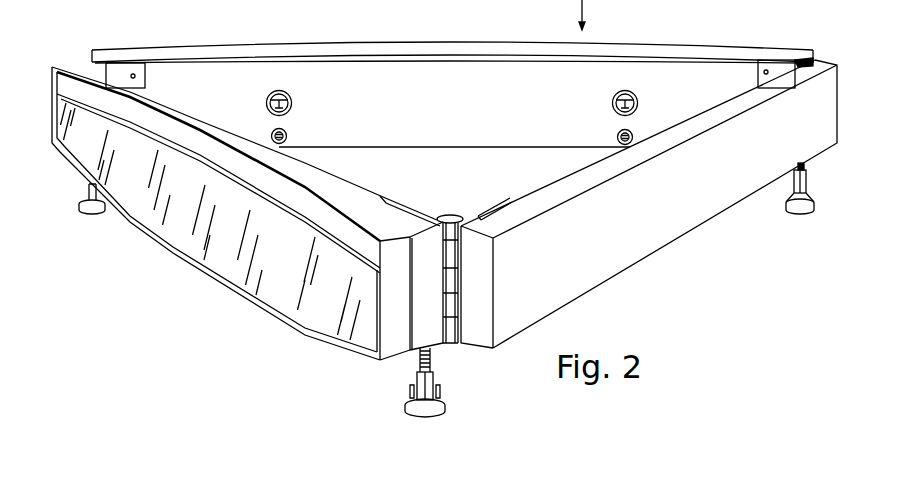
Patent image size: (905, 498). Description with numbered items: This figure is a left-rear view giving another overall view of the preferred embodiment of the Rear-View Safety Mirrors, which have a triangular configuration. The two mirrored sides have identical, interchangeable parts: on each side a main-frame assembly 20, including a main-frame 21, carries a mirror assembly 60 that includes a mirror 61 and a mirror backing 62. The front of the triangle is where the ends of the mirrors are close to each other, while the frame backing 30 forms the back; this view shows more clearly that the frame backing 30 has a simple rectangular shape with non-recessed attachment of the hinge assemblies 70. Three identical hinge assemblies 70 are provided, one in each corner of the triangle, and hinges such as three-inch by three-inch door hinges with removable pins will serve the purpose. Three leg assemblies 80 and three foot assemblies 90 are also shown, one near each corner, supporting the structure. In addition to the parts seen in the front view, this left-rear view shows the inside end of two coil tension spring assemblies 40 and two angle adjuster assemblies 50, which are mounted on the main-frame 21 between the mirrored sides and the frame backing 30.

The main-frame assembly 20 is at (389, 181).
The main-frame 21 is at (455, 106).
The frame backing 30 is at (657, 252).
The coil tension spring assembly 40 is at (308, 102).
The angle adjuster assembly 50 is at (308, 136).
The mirror assembly 60 is at (235, 318).
The mirror 61 is at (200, 253).
The mirror backing 62 is at (415, 47).
The hinge assembly 70 is at (158, 78).
The leg assembly 80 is at (444, 361).
The foot assembly 90 is at (800, 226).